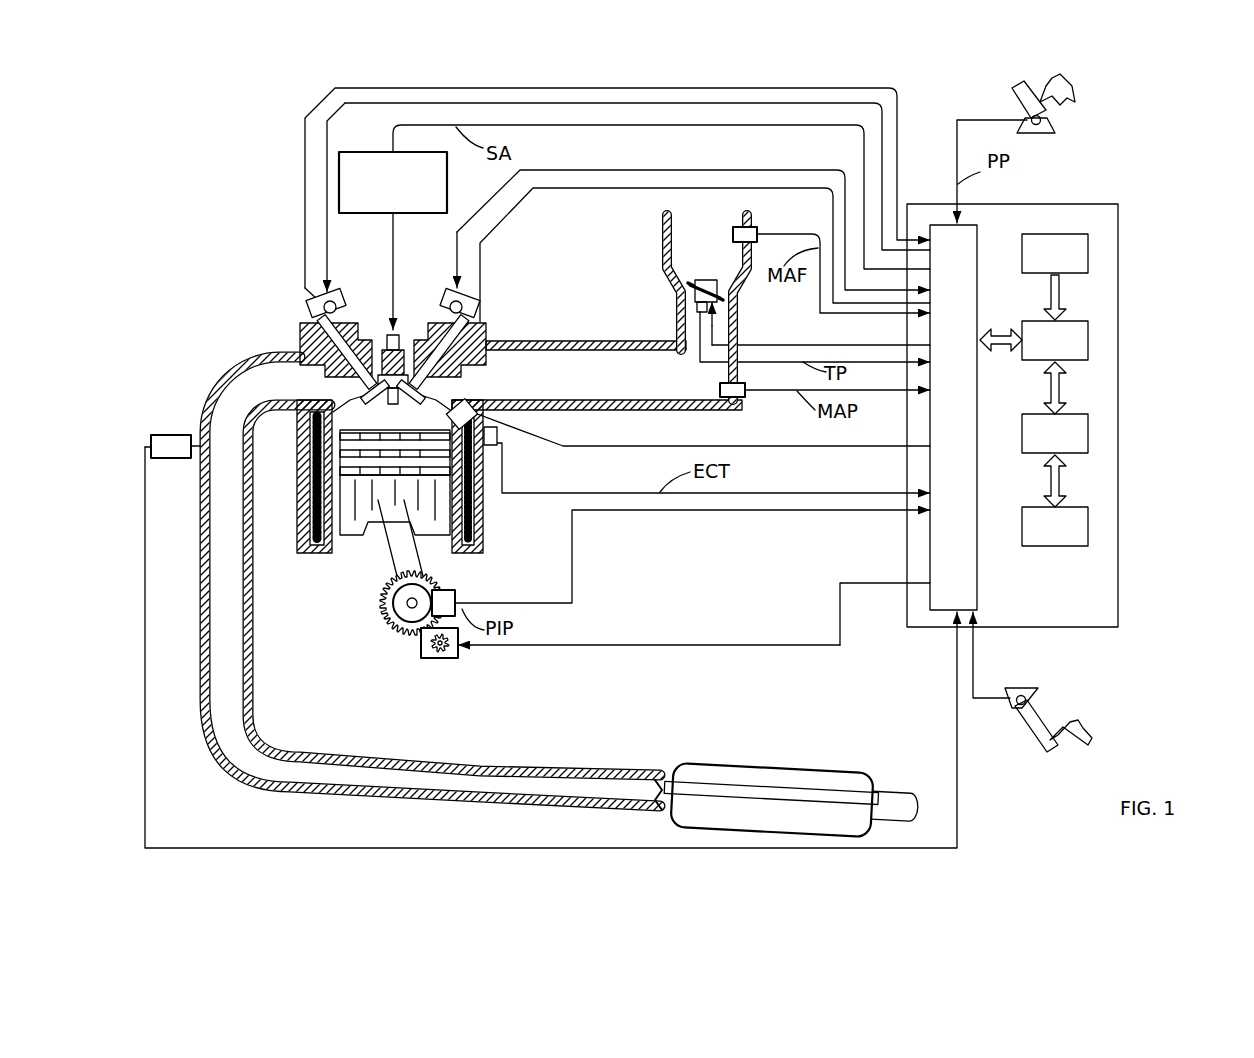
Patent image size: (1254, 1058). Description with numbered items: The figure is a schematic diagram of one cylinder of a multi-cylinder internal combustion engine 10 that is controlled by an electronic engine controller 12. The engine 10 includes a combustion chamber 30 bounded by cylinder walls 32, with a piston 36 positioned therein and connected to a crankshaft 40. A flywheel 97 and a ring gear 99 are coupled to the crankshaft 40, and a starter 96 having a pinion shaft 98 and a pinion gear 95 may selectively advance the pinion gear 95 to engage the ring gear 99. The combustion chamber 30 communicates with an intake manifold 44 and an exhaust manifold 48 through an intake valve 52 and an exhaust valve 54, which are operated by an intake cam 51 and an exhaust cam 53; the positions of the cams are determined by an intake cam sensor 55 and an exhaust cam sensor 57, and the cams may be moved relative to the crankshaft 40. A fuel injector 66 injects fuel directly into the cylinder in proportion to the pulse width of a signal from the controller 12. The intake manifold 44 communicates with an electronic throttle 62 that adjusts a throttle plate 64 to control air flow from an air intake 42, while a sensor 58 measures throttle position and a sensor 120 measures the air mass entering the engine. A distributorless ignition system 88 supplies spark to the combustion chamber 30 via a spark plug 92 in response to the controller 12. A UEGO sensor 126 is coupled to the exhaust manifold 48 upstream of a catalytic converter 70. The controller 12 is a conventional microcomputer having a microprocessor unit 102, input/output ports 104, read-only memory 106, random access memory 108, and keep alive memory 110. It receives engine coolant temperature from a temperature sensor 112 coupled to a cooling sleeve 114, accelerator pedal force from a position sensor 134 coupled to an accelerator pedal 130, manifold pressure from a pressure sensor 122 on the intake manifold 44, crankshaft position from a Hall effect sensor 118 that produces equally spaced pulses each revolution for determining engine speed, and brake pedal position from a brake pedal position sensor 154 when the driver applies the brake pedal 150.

The internal combustion engine 10 is at (238, 278).
The electronic engine controller 12 is at (1055, 401).
The combustion chamber 30 is at (322, 503).
The cylinder walls 32 is at (340, 530).
The piston 36 is at (377, 510).
The crankshaft 40 is at (422, 615).
The air intake 42 is at (718, 314).
The intake manifold 44 is at (657, 389).
The exhaust manifold 48 is at (562, 598).
The intake cam 51 is at (432, 290).
The intake valve 52 is at (455, 322).
The exhaust cam 53 is at (348, 290).
The exhaust valve 54 is at (350, 378).
The intake cam sensor 55 is at (472, 308).
The exhaust cam sensor 57 is at (326, 322).
The throttle position sensor 58 is at (692, 312).
The electronic throttle 62 is at (702, 310).
The throttle plate 64 is at (702, 288).
The fuel injector 66 is at (492, 416).
The catalytic converter 70 is at (685, 763).
The distributorless ignition system 88 is at (354, 152).
The spark plug 92 is at (395, 332).
The pinion gear 95 is at (446, 661).
The starter 96 is at (420, 665).
The flywheel 97 is at (384, 613).
The pinion shaft 98 is at (432, 657).
The ring gear 99 is at (410, 638).
The microprocessor unit 102 is at (1090, 340).
The input/output ports 104 is at (978, 232).
The read-only memory 106 is at (1090, 250).
The random access memory 108 is at (1090, 430).
The keep alive memory 110 is at (1090, 528).
The temperature sensor 112 is at (497, 447).
The cooling sleeve 114 is at (472, 512).
The Hall effect sensor 118 is at (458, 597).
The air mass sensor 120 is at (755, 228).
The pressure sensor 122 is at (742, 397).
The Universal Exhaust Gas Oxygen (UEGO) sensor 126 is at (152, 440).
The accelerator pedal 130 is at (1074, 103).
The position sensor 134 is at (1050, 122).
The brake pedal 150 is at (1034, 714).
The brake pedal position sensor 154 is at (1012, 697).